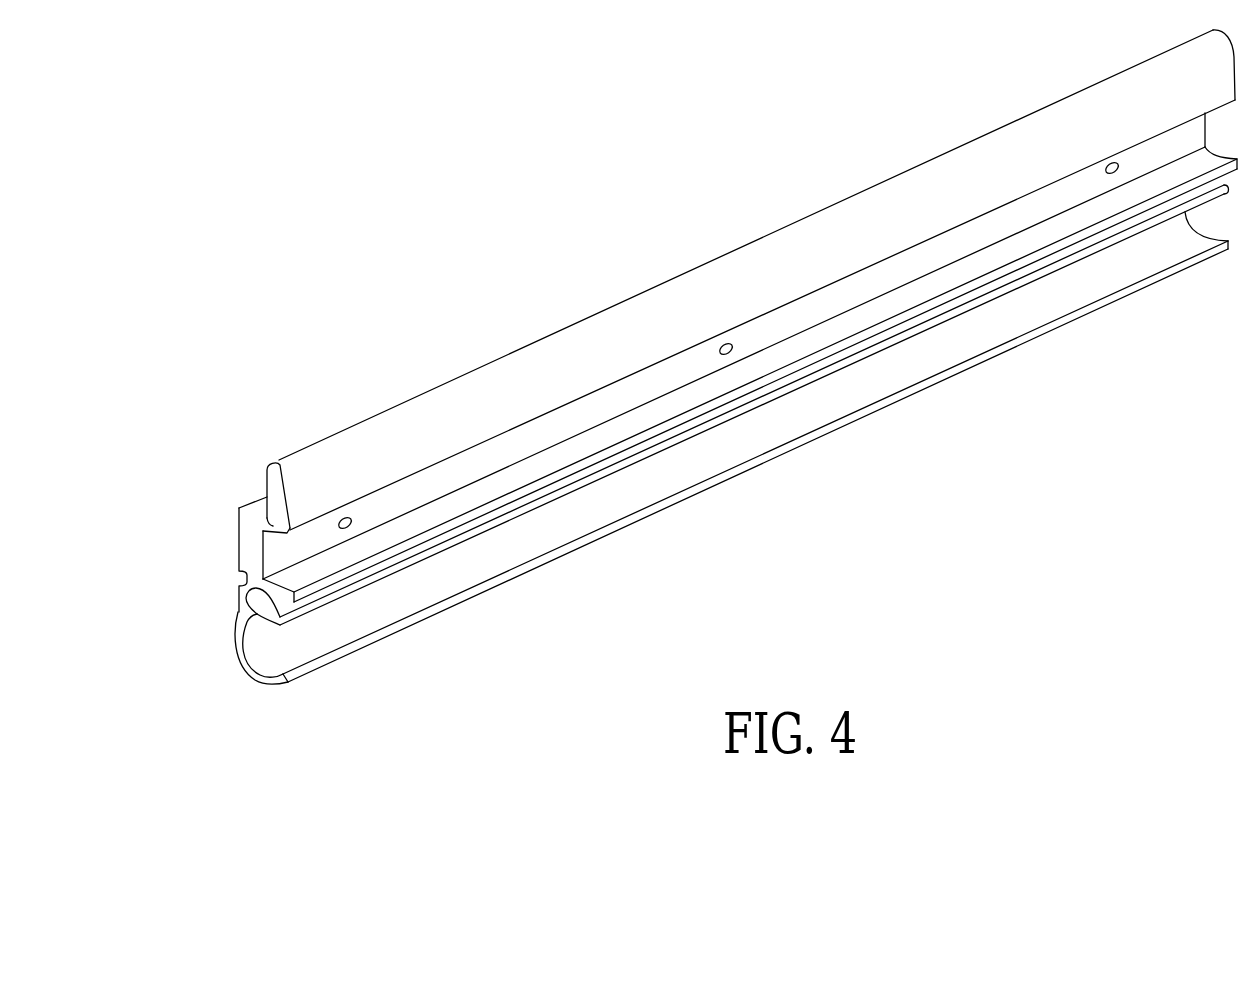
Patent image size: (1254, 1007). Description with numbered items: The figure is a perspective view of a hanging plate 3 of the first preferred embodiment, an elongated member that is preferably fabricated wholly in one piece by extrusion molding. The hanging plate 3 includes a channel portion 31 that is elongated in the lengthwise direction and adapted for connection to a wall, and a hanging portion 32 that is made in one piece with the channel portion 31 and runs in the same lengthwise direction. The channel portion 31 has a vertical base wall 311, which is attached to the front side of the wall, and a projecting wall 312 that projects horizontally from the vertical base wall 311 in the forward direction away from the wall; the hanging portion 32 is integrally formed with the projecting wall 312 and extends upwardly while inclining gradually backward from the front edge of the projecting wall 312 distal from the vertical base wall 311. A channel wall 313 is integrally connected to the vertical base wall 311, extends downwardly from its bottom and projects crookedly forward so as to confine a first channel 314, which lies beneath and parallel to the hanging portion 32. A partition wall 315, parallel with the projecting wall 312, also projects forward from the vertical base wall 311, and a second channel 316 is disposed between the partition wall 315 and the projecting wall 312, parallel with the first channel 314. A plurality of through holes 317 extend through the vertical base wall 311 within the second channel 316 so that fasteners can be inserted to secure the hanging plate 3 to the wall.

The hanging plate 3 is at (663, 236).
The channel portion 31 is at (200, 611).
The vertical base wall 311 is at (253, 548).
The projecting wall 312 is at (268, 517).
The channel wall 313 is at (240, 657).
The first channel 314 is at (521, 547).
The partition wall 315 is at (421, 537).
The second channel 316 is at (311, 573).
The through holes 317 is at (349, 519).
The hanging portion 32 is at (577, 352).